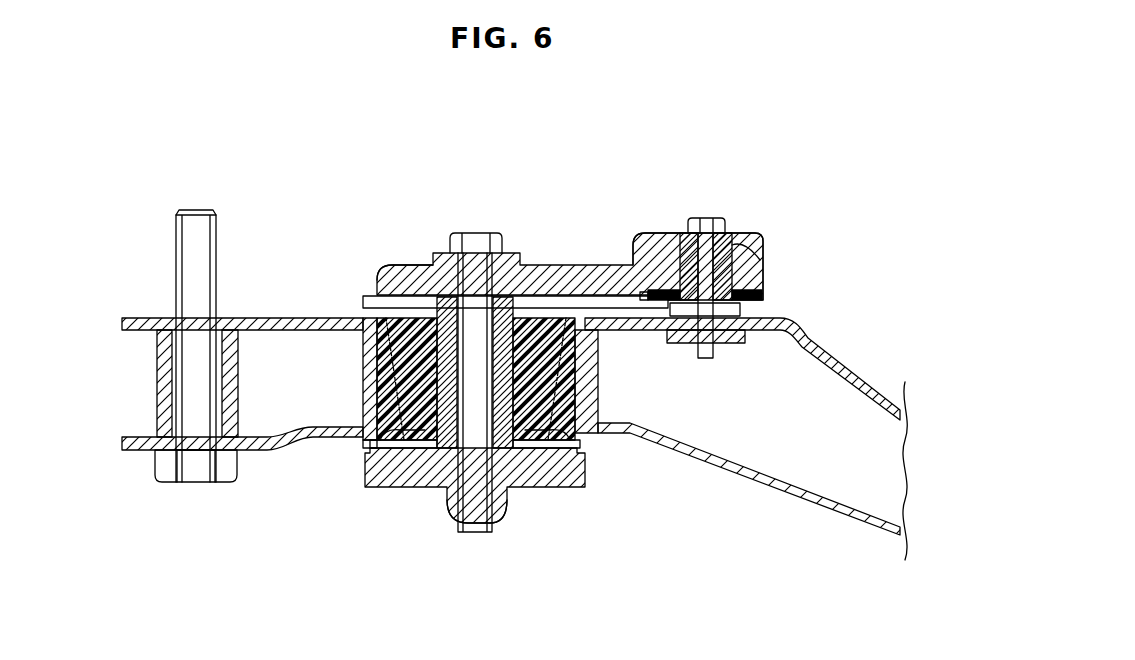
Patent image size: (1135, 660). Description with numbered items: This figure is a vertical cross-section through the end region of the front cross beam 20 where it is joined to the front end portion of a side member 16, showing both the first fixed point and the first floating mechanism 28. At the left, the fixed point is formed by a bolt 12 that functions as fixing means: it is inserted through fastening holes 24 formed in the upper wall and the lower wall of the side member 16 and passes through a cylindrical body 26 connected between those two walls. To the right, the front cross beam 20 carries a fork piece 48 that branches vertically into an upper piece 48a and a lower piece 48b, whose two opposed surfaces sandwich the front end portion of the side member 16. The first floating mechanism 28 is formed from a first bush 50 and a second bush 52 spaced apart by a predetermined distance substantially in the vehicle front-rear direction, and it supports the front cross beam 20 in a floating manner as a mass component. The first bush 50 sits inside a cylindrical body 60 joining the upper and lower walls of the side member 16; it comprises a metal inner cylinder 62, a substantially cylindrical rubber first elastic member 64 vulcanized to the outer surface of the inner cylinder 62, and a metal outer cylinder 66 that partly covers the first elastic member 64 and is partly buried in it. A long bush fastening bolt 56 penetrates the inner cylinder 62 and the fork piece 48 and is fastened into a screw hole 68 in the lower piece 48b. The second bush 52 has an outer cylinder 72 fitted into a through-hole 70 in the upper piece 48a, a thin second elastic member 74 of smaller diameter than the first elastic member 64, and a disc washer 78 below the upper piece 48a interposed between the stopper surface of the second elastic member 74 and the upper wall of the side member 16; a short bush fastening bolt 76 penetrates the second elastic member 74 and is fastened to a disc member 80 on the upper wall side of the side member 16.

The bolt 12 is at (200, 208).
The side member 16 is at (296, 461).
The front cross beam 20 is at (662, 217).
The fastening holes 24 is at (216, 336).
The cylindrical body 26 is at (155, 375).
The first floating mechanism 28 is at (619, 162).
The fork piece 48 is at (554, 250).
The upper piece 48a is at (390, 262).
The lower piece 48b is at (418, 488).
The first bush 50 is at (370, 372).
The second bush 52 is at (655, 292).
The bush fastening bolt 56 is at (475, 534).
The cylindrical body 60 is at (600, 362).
The inner cylinder 62 is at (518, 440).
The first elastic member 64 is at (382, 398).
The outer cylinder 66 is at (595, 436).
The screw hole 68 is at (500, 521).
The through-hole 70 is at (745, 258).
The outer cylinder 72 is at (735, 240).
The second elastic member 74 is at (760, 290).
The bush fastening bolt 76 is at (705, 222).
The disc washer 78 is at (745, 312).
The disc member 80 is at (752, 345).